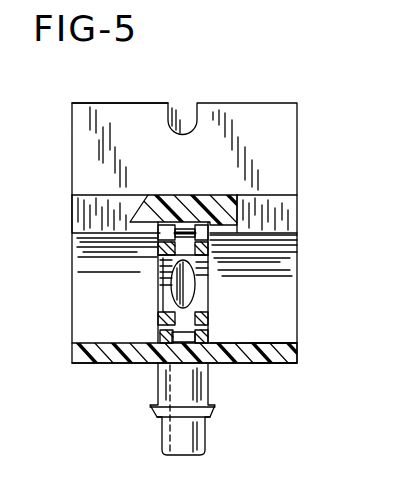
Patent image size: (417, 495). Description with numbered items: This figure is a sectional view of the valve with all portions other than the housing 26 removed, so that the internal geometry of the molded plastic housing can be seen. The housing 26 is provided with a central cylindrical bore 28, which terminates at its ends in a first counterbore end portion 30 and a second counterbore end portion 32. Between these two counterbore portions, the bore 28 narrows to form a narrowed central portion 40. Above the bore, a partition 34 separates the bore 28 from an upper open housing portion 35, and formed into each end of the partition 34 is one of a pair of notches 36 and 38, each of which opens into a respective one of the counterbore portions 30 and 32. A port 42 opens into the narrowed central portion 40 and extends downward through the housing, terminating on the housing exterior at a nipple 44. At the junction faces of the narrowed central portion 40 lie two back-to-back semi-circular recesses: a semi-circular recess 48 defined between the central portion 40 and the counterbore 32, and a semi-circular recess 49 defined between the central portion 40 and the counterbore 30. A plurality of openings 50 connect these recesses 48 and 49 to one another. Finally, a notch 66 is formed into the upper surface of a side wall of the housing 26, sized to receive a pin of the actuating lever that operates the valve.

The housing 26 is at (305, 211).
The cylindrical bore 28 is at (196, 287).
The first counterbore end portion 30 is at (243, 343).
The second counterbore end portion 32 is at (100, 343).
The partition 34 is at (172, 202).
The upper open housing portion 35 is at (240, 110).
The notch 36 is at (297, 207).
The notch 38 is at (75, 200).
The narrowed central portion 40 is at (165, 290).
The port 42 is at (208, 284).
The nipple 44 is at (208, 385).
The semi-circular recess 48 is at (143, 343).
The semi-circular recess 49 is at (297, 348).
The openings 50 is at (158, 362).
The notch 66 is at (174, 107).